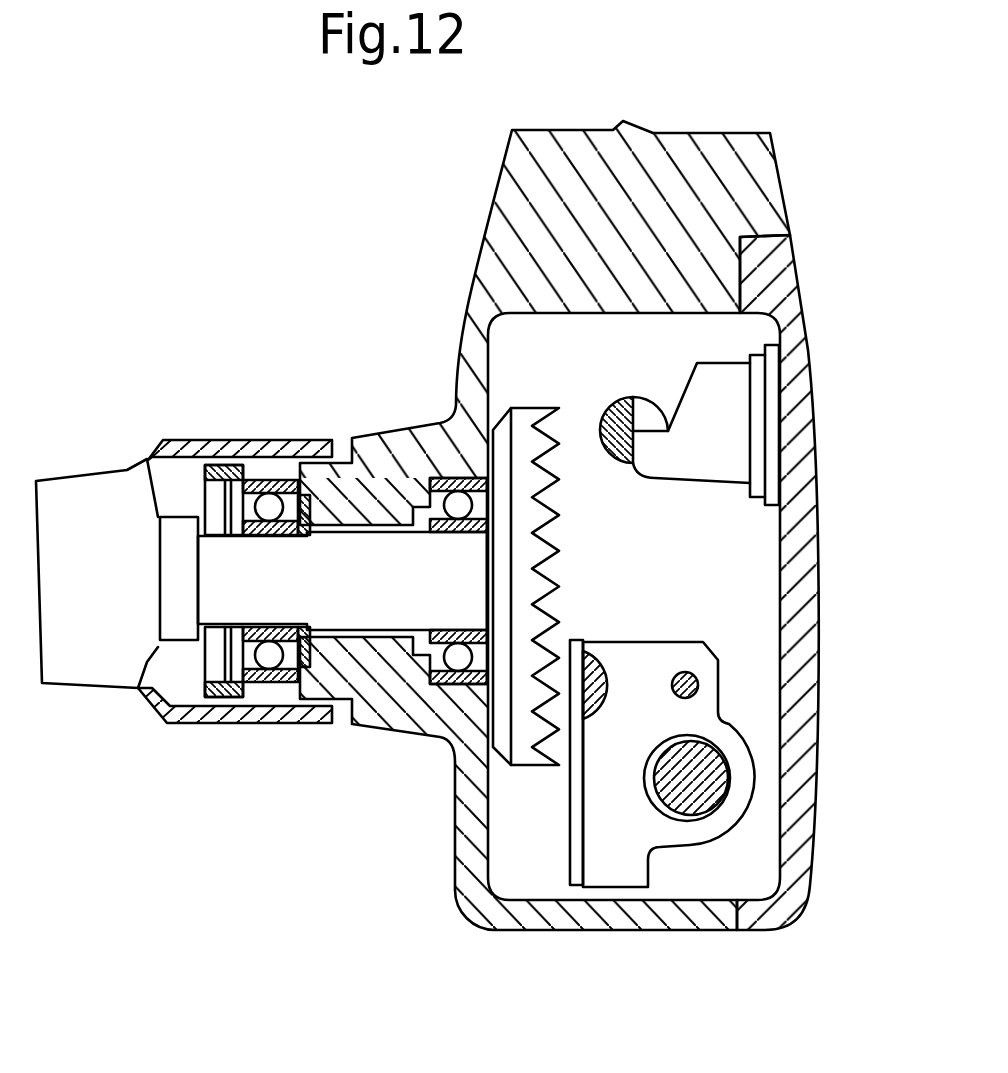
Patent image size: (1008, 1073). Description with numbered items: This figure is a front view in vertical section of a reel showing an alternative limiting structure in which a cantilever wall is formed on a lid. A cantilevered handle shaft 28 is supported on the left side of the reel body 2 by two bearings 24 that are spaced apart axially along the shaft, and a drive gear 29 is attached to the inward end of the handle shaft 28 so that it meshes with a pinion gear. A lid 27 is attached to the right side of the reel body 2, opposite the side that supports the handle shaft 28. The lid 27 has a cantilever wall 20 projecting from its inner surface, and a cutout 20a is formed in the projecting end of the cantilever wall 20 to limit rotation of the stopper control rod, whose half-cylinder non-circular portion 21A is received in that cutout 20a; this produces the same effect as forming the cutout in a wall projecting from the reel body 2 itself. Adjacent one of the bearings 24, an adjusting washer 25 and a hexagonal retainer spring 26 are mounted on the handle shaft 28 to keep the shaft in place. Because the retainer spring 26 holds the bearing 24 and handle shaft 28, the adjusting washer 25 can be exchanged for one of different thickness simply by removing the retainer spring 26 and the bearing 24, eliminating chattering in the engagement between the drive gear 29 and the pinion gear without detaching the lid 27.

The reel body 2 is at (773, 193).
The lid 27 is at (803, 333).
The drive gear 29 is at (532, 407).
The non-circular portion 21A is at (615, 460).
The cantilever wall 20 is at (713, 480).
The cutout 20a is at (643, 396).
The cantilevered handle shaft 28 is at (370, 602).
The hexagonal retainer spring 26 is at (193, 723).
The adjusting washer 25 is at (293, 723).
The bearings 24 is at (232, 722).